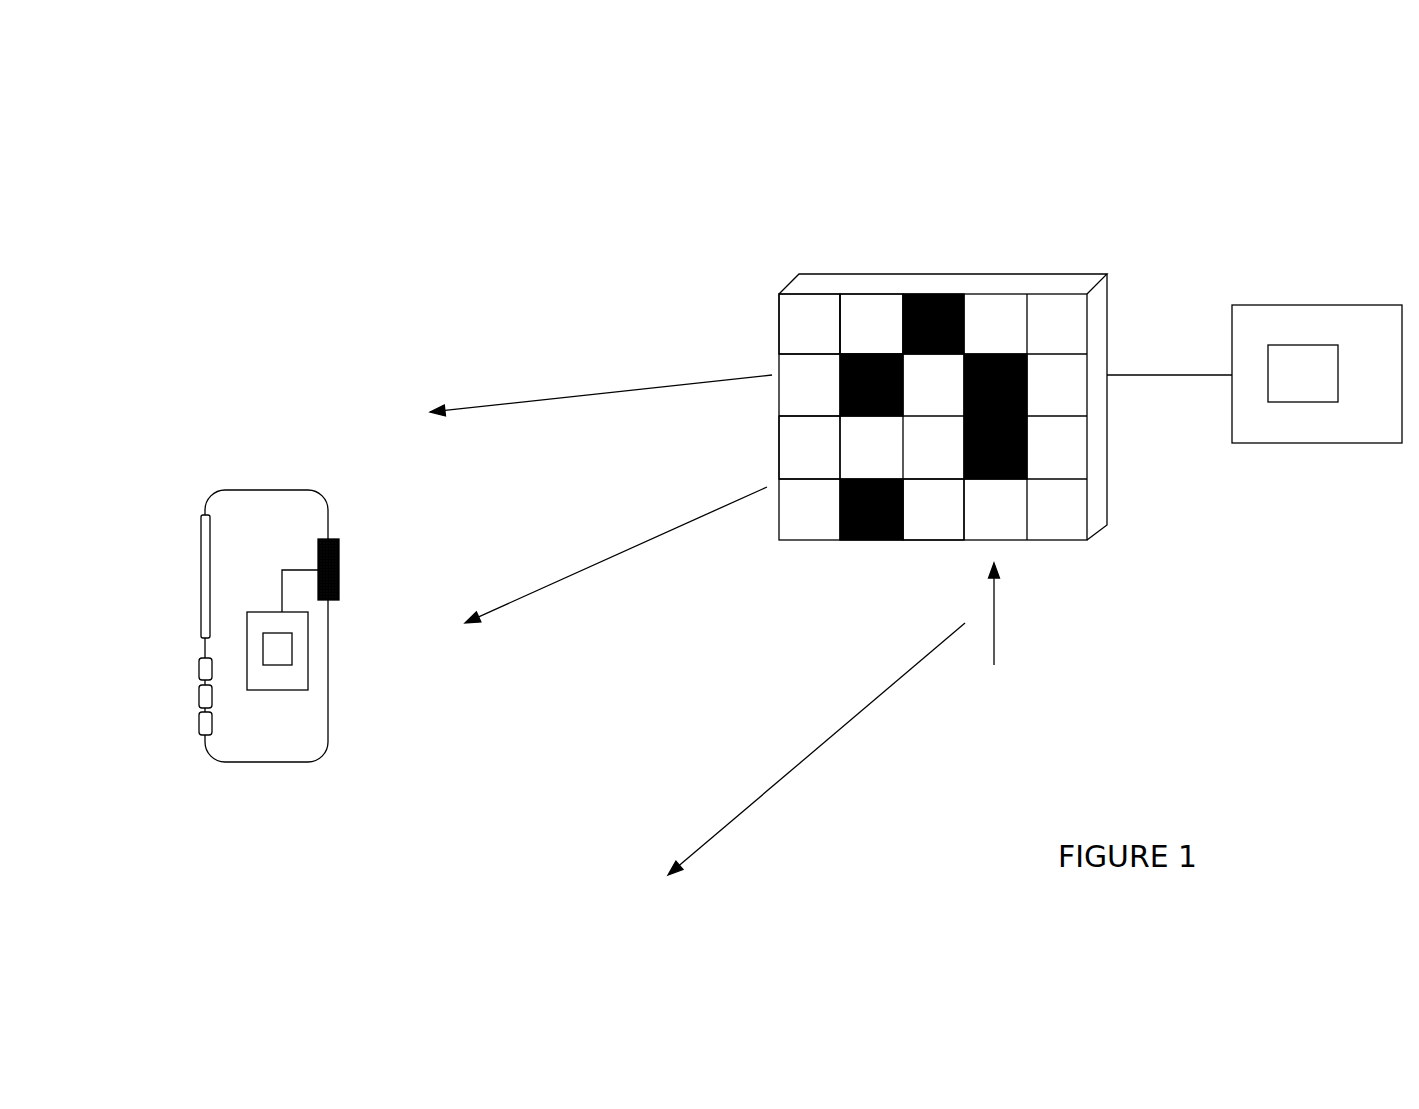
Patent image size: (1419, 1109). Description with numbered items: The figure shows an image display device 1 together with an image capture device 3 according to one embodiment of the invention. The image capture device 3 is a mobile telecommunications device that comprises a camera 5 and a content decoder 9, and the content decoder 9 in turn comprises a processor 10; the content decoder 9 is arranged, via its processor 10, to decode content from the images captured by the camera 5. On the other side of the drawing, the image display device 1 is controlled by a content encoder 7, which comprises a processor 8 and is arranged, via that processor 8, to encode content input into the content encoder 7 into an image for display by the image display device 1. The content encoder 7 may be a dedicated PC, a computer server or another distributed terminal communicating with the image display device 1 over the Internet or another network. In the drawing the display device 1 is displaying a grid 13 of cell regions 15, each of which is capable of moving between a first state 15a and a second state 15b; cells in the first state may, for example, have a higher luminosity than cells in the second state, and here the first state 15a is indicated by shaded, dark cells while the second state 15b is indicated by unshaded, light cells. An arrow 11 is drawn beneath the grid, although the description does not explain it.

The image display device 1 is at (1098, 546).
The image capture device 3 is at (291, 767).
The camera 5 is at (345, 551).
The content encoder 7 is at (1371, 435).
The processor 8 is at (1304, 360).
The content decoder 9 is at (244, 594).
The processor 10 is at (258, 654).
The light emission direction 11 is at (992, 632).
The grid 13 is at (829, 303).
The cell regions 15 is at (889, 300).
The first state 15a is at (844, 549).
The second state 15b is at (928, 531).